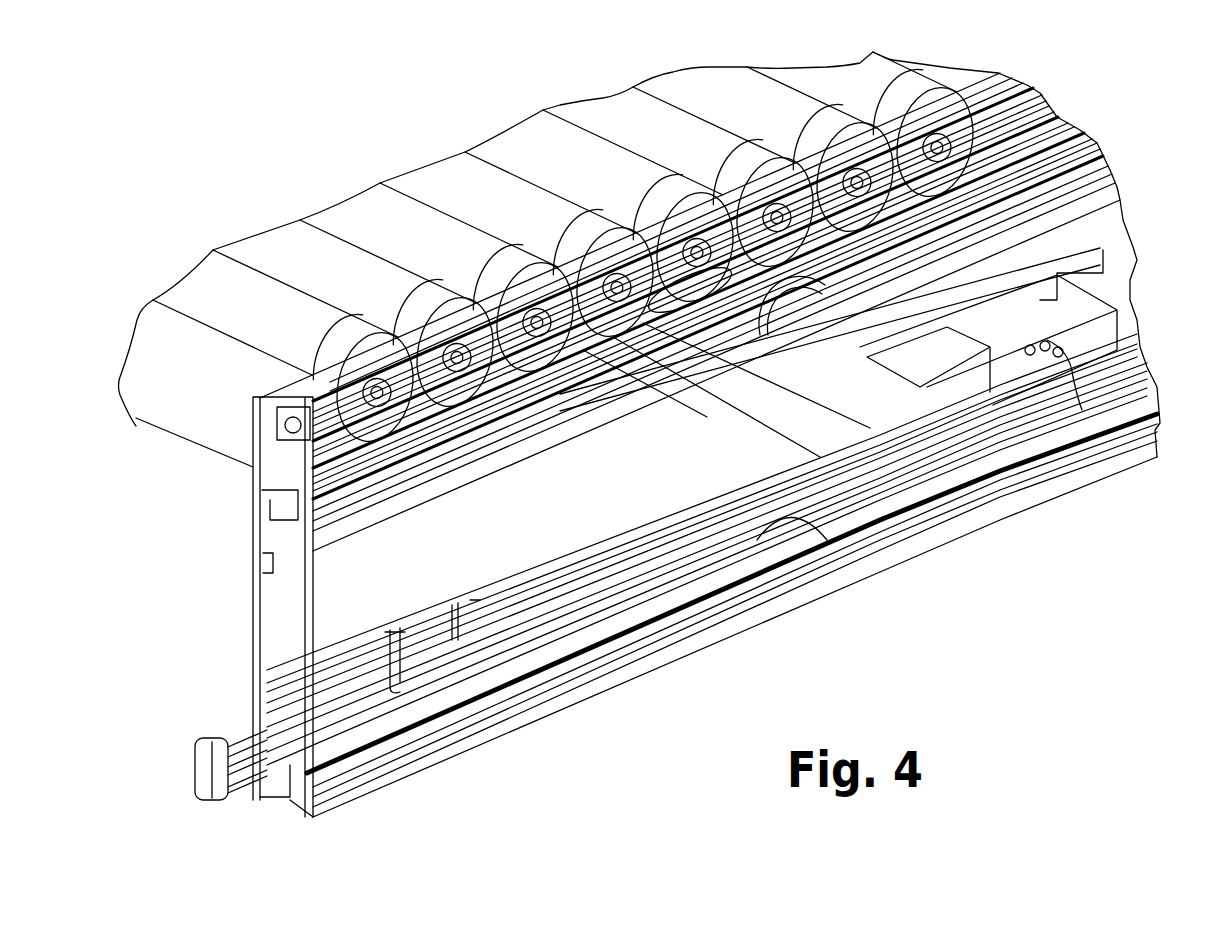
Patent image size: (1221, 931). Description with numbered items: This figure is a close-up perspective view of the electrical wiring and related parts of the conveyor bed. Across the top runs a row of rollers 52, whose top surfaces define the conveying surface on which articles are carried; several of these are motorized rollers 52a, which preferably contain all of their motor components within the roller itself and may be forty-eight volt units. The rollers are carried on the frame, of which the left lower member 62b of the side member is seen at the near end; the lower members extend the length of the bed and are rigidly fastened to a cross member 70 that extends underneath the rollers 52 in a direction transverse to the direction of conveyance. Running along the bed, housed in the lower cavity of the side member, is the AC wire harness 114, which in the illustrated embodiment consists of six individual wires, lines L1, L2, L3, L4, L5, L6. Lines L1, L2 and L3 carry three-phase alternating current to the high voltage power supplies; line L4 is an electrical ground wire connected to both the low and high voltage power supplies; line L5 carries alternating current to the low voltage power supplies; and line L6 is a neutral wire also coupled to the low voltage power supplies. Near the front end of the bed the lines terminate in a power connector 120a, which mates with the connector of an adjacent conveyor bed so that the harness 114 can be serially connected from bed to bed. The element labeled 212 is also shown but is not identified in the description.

The rollers 52 is at (218, 445).
The motorized rollers 52a is at (577, 393).
The lower member 62b is at (253, 625).
The cross member 70 is at (725, 398).
The AC wire harness 114 is at (767, 520).
The power connector 120a is at (218, 797).
The conductor rail 212 is at (1113, 188).
The line L1 is at (245, 720).
The line L2 is at (477, 627).
The line L3 is at (513, 662).
The line L4 is at (560, 643).
The line L5 is at (620, 597).
The line L6 is at (667, 560).